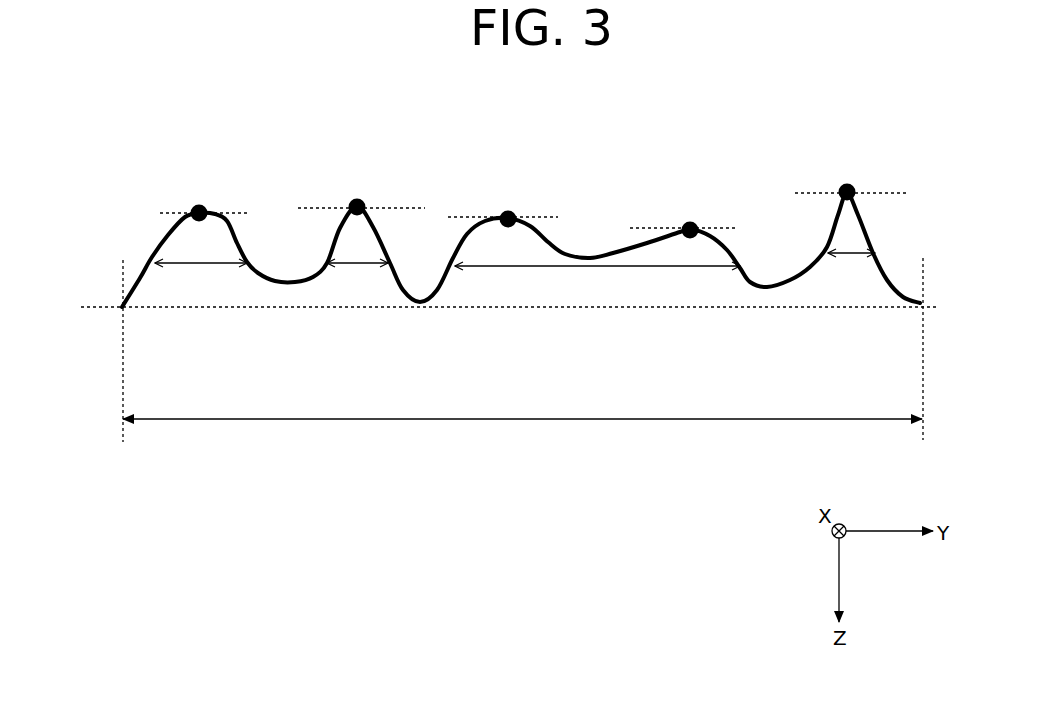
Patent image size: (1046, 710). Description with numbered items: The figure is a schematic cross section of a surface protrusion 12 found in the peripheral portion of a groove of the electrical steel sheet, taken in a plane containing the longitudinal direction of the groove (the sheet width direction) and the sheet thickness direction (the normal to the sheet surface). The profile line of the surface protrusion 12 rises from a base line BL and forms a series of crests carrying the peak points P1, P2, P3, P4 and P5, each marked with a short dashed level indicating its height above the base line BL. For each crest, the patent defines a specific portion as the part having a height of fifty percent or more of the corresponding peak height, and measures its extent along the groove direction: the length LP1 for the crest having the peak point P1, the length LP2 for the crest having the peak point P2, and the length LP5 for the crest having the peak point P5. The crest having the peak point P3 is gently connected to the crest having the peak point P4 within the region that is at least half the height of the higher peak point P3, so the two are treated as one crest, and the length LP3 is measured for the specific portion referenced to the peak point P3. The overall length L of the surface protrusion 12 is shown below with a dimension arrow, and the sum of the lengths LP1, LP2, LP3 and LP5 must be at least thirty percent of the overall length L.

The surface protrusion 12 is at (168, 235).
The base line BL is at (100, 305).
The peak point P1 is at (202, 208).
The peak point P2 is at (357, 203).
The peak point P3 is at (507, 213).
The peak point P4 is at (692, 223).
The peak point P5 is at (848, 185).
The length of specific portion LP1 is at (201, 281).
The length of specific portion LP2 is at (357, 281).
The length of specific portion LP3 is at (597, 284).
The length of specific portion LP5 is at (852, 273).
The overall length of surface protrusion L is at (522, 440).